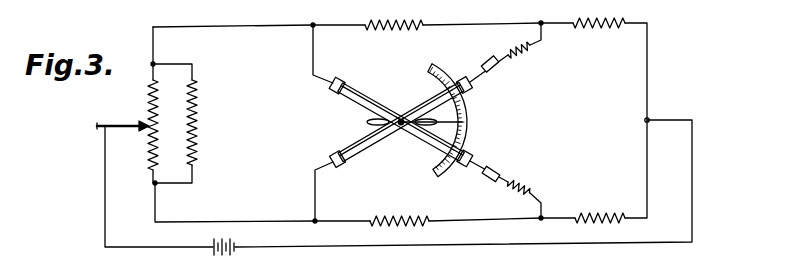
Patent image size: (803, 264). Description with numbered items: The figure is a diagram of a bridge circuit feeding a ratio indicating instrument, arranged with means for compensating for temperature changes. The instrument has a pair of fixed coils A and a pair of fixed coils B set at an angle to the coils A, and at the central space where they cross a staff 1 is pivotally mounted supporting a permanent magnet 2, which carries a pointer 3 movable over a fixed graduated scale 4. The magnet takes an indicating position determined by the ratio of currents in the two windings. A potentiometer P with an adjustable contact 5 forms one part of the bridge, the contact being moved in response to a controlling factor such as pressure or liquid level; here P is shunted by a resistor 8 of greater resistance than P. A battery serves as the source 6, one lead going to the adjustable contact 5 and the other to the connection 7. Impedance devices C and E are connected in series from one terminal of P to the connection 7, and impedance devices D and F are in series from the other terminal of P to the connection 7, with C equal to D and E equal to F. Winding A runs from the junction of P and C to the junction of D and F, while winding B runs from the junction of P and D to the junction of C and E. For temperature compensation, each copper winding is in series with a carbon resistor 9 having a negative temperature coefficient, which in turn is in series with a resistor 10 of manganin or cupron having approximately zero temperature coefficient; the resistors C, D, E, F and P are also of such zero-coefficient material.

The staff 1 is at (401, 118).
The permanent magnet 2 is at (370, 121).
The pointer 3 is at (458, 128).
The graduated scale 4 is at (462, 114).
The adjustable contact 5 is at (140, 131).
The source 6 is at (230, 251).
The connection 7 is at (645, 120).
The resistor 8 is at (199, 120).
The carbon resistor 9 is at (489, 60).
The zero-temperature-coefficient resistor 10 is at (528, 52).
The fixed coils A is at (349, 87).
The fixed coils B is at (358, 140).
The impedance device C is at (394, 15).
The impedance device D is at (399, 210).
The impedance device E is at (599, 14).
The impedance device F is at (600, 208).
The potentiometer P is at (143, 125).